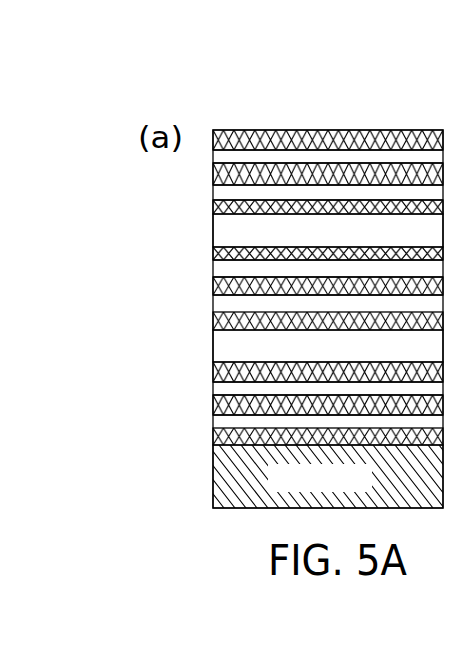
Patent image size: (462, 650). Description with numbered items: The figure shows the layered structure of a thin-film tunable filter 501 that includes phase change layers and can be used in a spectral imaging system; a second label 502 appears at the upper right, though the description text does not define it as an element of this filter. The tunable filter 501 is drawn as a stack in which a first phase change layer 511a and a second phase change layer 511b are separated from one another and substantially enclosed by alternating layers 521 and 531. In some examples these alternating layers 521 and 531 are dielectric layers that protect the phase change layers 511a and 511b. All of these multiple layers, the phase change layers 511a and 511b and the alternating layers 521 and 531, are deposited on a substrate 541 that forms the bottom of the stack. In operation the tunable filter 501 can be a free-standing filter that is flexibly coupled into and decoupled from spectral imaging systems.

The tunable filter 501 is at (242, 100).
The layered structure 502 is at (445, 39).
The first phase change layer 511a is at (213, 233).
The second phase change layer 511b is at (213, 350).
The alternating layer 521 is at (213, 381).
The alternating layer 531 is at (213, 433).
The substrate 541 is at (213, 485).